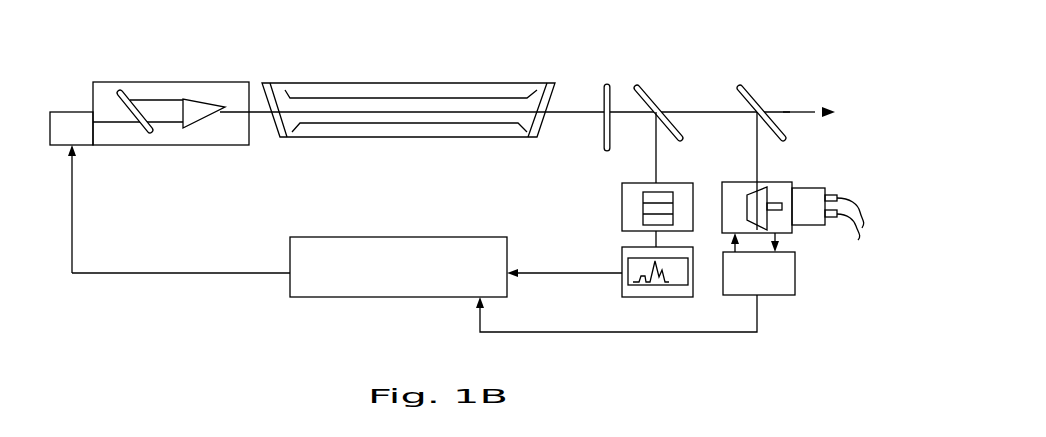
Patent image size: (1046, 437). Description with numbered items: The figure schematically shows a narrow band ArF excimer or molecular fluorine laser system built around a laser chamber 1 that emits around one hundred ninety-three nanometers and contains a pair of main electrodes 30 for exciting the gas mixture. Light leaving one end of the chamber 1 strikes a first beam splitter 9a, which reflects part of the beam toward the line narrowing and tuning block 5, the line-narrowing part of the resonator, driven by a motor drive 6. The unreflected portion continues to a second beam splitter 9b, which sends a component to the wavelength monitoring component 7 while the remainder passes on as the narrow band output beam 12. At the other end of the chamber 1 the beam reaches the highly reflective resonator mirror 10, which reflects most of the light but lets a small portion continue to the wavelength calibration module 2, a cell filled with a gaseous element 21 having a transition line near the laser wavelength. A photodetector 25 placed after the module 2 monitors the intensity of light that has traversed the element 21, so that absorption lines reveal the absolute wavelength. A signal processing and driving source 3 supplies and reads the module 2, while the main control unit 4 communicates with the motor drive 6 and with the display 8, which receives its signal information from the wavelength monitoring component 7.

The laser chamber 1 is at (399, 116).
The main electrodes 30 is at (485, 93).
The line narrowing and tuning block 5 is at (205, 139).
The motor drive 6 is at (63, 139).
The resonator mirror 10 is at (606, 101).
The first beam splitter 9a is at (658, 96).
The second beam splitter 9b is at (753, 96).
The output beam 12 is at (815, 100).
The wavelength calibration module 2 is at (773, 178).
The element 21 is at (760, 215).
The photodetector 25 is at (798, 217).
The signal processing and driving source 3 is at (753, 282).
The main control unit 4 is at (391, 282).
The wavelength monitoring component 7 is at (623, 231).
The display 8 is at (667, 288).